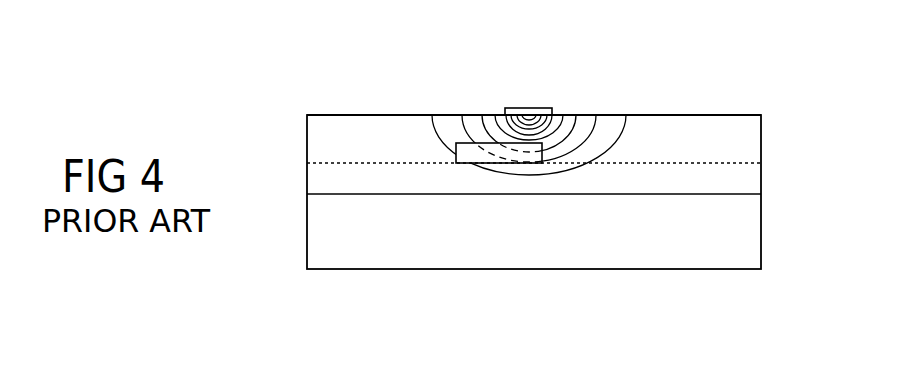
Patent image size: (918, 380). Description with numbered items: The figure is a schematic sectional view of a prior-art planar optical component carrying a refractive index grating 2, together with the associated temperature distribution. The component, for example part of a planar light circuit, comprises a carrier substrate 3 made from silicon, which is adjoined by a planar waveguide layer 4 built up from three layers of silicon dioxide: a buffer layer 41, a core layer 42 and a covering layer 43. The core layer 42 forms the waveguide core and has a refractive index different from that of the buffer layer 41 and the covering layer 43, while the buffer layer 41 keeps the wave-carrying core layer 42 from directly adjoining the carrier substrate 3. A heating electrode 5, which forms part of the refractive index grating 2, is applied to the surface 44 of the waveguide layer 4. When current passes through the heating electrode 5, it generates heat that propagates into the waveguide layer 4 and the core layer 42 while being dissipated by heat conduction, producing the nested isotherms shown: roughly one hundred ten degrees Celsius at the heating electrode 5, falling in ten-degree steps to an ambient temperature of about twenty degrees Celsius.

The refractive index grating 2 is at (583, 113).
The carrier substrate 3 is at (750, 227).
The planar waveguide layer 4 is at (763, 143).
The heating electrode 5 is at (532, 107).
The buffer layer 41 is at (330, 175).
The core layer 42 is at (470, 150).
The covering layer 43 is at (335, 137).
The surface 44 is at (685, 113).